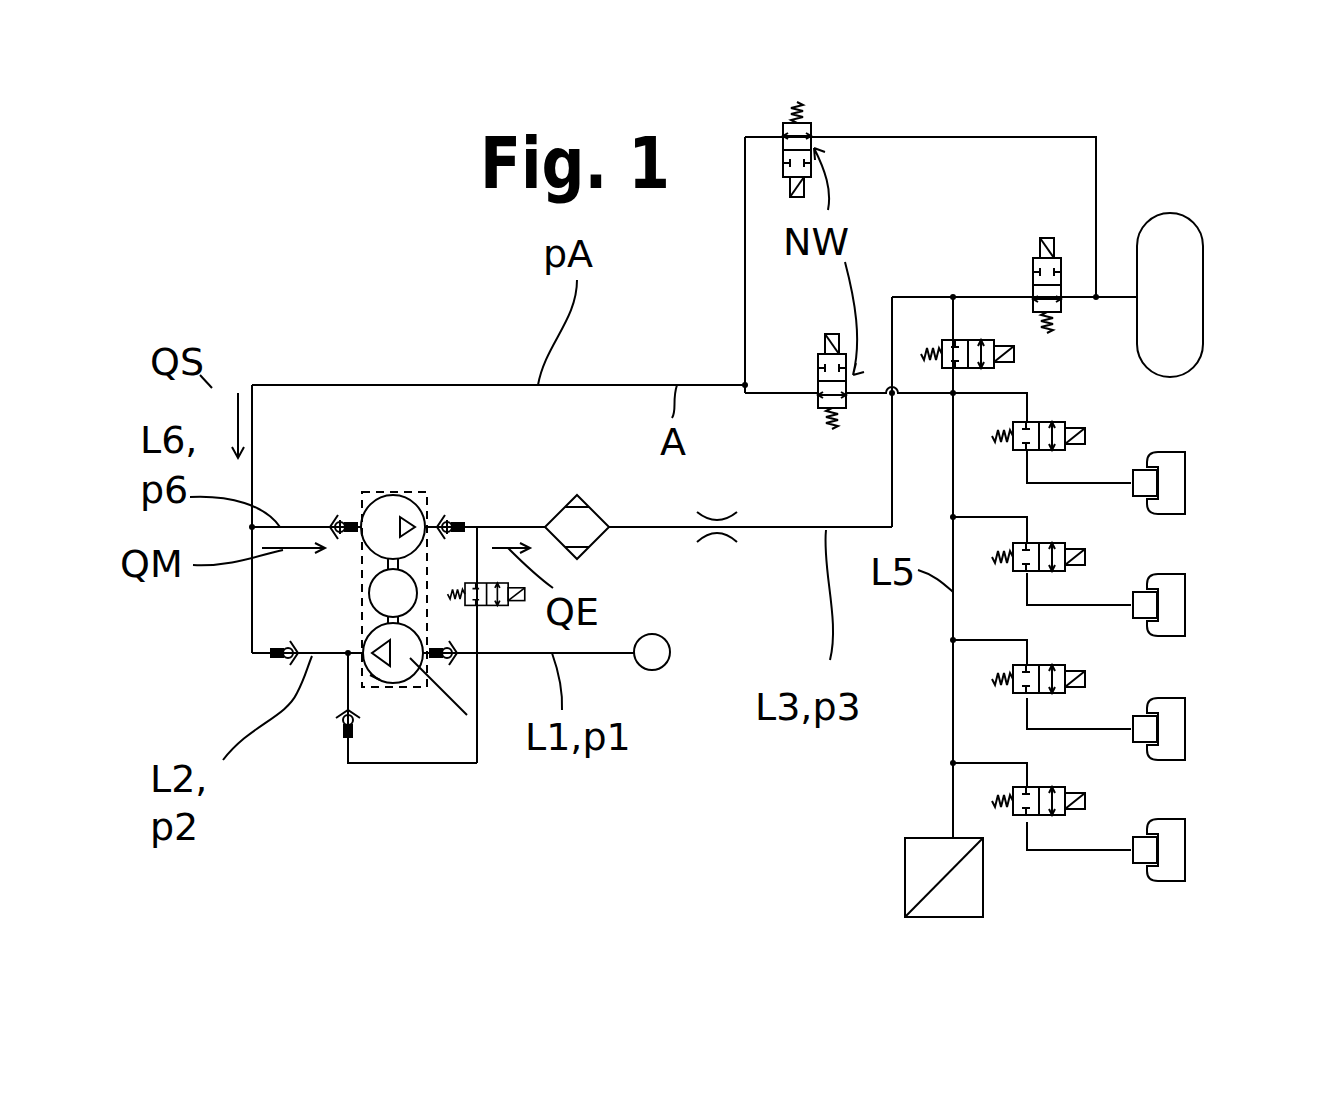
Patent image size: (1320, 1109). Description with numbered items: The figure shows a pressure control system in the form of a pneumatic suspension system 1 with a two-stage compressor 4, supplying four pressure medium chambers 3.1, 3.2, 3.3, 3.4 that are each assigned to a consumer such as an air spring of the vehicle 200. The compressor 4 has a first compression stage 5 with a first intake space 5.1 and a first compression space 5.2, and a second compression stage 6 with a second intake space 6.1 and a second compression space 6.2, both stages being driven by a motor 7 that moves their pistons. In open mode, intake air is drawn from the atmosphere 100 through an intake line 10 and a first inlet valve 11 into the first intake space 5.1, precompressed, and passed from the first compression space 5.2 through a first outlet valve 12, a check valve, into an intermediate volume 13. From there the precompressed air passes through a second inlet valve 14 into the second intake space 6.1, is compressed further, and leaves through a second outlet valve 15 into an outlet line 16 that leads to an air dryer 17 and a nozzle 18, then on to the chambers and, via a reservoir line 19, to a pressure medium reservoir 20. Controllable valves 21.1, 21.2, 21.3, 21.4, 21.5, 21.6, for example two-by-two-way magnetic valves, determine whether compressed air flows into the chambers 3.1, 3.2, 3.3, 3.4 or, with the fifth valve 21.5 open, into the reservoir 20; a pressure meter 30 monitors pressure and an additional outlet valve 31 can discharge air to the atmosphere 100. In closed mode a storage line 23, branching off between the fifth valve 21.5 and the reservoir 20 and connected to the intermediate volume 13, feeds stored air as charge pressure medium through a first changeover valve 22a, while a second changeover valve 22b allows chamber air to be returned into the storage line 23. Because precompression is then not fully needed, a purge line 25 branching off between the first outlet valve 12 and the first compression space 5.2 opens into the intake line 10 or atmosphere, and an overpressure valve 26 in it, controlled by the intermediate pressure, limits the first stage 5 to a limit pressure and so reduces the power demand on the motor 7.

The pneumatic suspension system 1 is at (396, 214).
The first pressure medium chamber 3.1 is at (1172, 492).
The second pressure medium chamber 3.2 is at (1172, 614).
The third pressure medium chamber 3.3 is at (1172, 738).
The fourth pressure medium chamber 3.4 is at (1172, 859).
The two-stage compressor 4 is at (398, 493).
The first compression stage 5 is at (400, 682).
The first intake space 5.1 is at (467, 715).
The first compression space 5.2 is at (377, 677).
The second compression stage 6 is at (388, 497).
The second intake space 6.1 is at (368, 513).
The second compression space 6.2 is at (423, 512).
The motor 7 is at (368, 593).
The intake line 10 is at (602, 653).
The first inlet valve 11 is at (450, 660).
The first outlet valve 12 is at (272, 658).
The intermediate volume 13 is at (252, 600).
The second inlet valve 14 is at (347, 518).
The second outlet valve 15 is at (445, 517).
The outlet line 16 is at (666, 525).
The air dryer 17 is at (597, 543).
The nozzle 18 is at (700, 513).
The reservoir line 19 is at (993, 295).
The pressure medium reservoir 20 is at (1188, 358).
The first valve 21.1 is at (1072, 428).
The second valve 21.2 is at (1072, 550).
The third valve 21.3 is at (1072, 673).
The fourth valve 21.4 is at (1072, 795).
The fifth valve 21.5 is at (1063, 252).
The sixth valve 21.6 is at (995, 362).
The first changeover valve 22a is at (785, 180).
The second changeover valve 22b is at (818, 353).
The storage line 23 is at (265, 387).
The purge line 25 is at (345, 683).
The overpressure valve 26 is at (347, 732).
The pressure meter 30 is at (930, 838).
The additional outlet valve 31 is at (505, 605).
The atmosphere 100 is at (664, 645).
The vehicle 200 is at (785, 812).